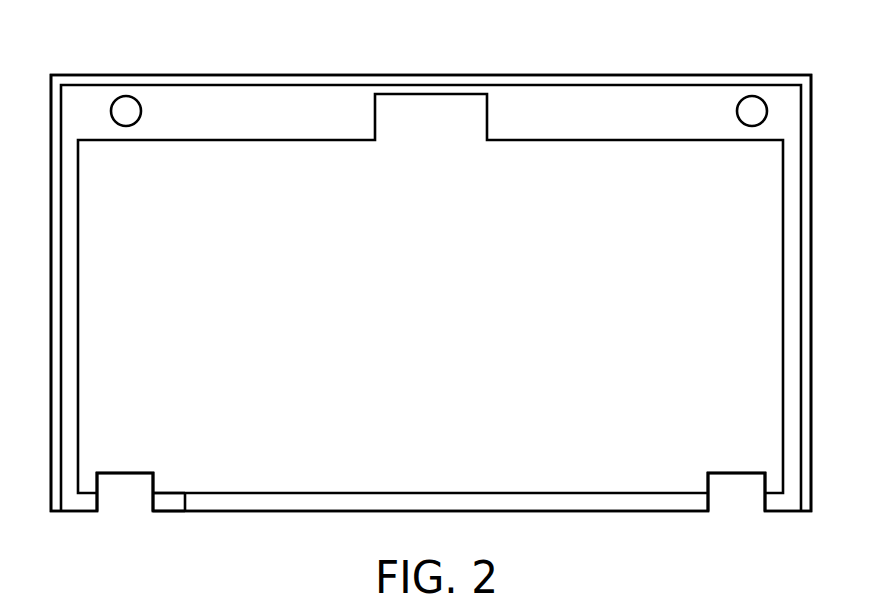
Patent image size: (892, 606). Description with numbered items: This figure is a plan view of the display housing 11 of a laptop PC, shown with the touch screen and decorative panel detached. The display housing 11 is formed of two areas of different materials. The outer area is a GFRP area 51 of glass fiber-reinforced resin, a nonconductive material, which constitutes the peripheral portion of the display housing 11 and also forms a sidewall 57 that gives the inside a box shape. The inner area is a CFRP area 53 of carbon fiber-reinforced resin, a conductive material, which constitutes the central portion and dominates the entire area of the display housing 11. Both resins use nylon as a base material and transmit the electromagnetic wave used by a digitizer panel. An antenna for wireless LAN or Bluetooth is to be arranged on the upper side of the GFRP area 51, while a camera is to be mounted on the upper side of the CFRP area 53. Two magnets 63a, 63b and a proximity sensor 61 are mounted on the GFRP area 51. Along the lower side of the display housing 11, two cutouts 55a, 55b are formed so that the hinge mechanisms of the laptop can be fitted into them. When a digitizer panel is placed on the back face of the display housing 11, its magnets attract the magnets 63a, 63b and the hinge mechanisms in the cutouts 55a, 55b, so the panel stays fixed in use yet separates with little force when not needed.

The display housing 11 is at (817, 62).
The GFRP area 51 is at (265, 107).
The CFRP area 53 is at (440, 287).
The cutout 55a is at (123, 498).
The cutout 55b is at (740, 498).
The sidewall 57 is at (57, 358).
The proximity sensor 61 is at (172, 500).
The magnet 63a is at (127, 96).
The magnet 63b is at (752, 96).